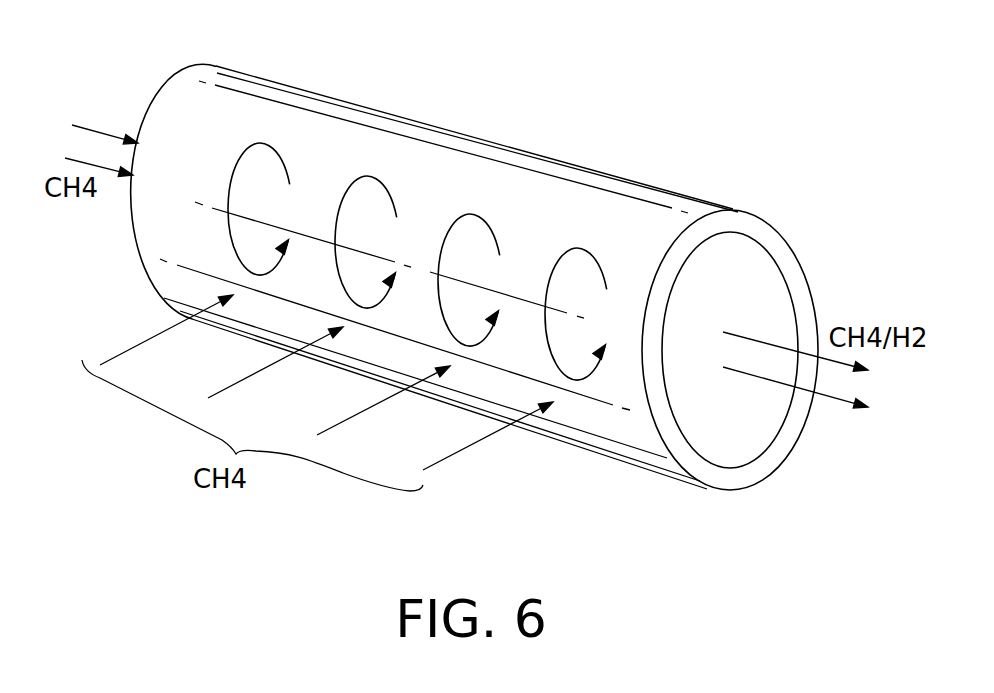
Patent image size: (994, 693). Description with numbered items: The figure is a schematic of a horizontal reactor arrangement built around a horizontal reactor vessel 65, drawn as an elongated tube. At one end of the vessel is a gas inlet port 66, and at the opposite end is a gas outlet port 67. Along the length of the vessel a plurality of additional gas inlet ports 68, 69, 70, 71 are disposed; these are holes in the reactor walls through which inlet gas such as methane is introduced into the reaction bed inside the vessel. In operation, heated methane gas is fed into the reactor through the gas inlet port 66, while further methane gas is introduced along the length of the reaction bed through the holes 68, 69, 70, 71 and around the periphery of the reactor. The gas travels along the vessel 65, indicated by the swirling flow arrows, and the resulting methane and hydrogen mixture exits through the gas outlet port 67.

The horizontal reactor vessel 65 is at (747, 210).
The gas inlet port 66 is at (152, 118).
The gas outlet port 67 is at (740, 450).
The gas inlet port 68 is at (120, 355).
The gas inlet port 69 is at (223, 387).
The gas inlet port 70 is at (333, 425).
The gas inlet port 71 is at (438, 462).